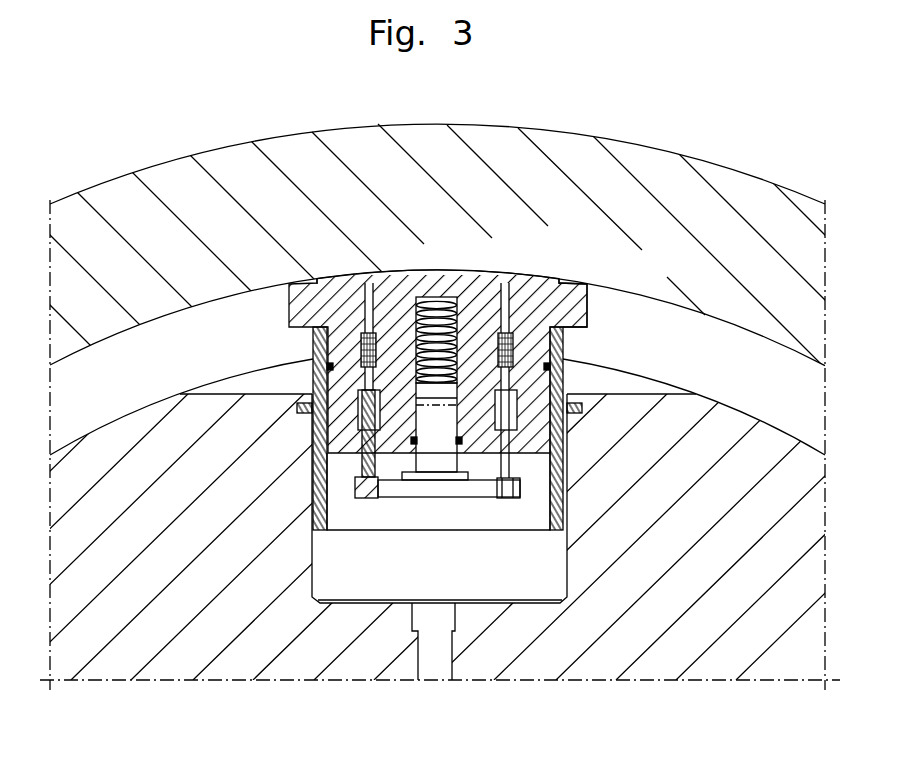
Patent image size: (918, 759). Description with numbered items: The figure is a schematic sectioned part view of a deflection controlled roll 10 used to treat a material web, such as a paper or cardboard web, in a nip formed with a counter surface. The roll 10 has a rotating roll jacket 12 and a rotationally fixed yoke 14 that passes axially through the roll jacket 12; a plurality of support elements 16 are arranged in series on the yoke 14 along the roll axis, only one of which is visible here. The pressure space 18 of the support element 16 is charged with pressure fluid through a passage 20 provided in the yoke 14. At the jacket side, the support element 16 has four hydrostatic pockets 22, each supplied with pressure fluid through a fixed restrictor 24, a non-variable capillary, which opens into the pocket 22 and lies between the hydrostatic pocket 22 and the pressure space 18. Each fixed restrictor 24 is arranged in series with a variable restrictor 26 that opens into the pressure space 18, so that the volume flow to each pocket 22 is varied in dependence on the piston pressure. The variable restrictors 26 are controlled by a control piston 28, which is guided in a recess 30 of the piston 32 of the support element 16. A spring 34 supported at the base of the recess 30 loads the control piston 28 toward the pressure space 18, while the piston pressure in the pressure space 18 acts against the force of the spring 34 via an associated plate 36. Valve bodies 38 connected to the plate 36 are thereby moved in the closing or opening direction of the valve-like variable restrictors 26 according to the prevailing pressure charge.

The deflection controlled roll 10 is at (552, 116).
The roll jacket 12 is at (668, 172).
The yoke 14 is at (70, 520).
The support element 16 is at (606, 298).
The pressure space 18 is at (542, 582).
The passage 20 is at (441, 662).
The hydrostatic pocket 22 is at (341, 283).
The fixed restrictor 24 is at (362, 350).
The variable restrictor 26 is at (340, 423).
The control piston 28 is at (426, 460).
The recess 30 is at (455, 400).
The piston 32 is at (548, 286).
The spring 34 is at (408, 305).
The plate 36 is at (470, 490).
The valve body 38 is at (325, 468).